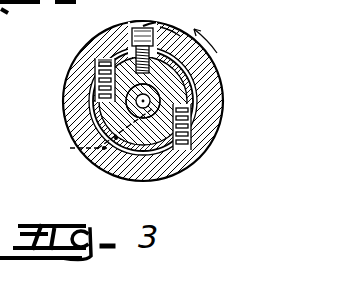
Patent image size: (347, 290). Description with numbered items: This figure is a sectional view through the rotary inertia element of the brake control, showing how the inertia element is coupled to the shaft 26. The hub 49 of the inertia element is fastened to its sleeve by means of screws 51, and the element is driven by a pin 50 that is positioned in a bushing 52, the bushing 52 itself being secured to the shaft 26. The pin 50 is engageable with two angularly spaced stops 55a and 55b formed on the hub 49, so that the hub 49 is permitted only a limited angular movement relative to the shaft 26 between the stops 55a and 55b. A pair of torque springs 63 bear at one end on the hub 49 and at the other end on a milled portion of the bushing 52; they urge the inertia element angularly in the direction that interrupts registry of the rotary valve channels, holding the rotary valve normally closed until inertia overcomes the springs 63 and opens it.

The shaft 26 is at (184, 152).
The hub 49 is at (205, 76).
The pin 50 is at (163, 25).
The screws 51 is at (69, 151).
The bushing 52 is at (117, 61).
The stop 55a is at (139, 28).
The stop 55b is at (160, 32).
The torque springs 63 is at (98, 80).